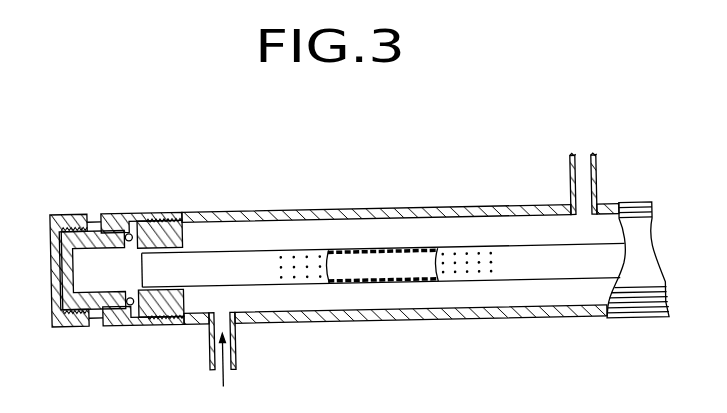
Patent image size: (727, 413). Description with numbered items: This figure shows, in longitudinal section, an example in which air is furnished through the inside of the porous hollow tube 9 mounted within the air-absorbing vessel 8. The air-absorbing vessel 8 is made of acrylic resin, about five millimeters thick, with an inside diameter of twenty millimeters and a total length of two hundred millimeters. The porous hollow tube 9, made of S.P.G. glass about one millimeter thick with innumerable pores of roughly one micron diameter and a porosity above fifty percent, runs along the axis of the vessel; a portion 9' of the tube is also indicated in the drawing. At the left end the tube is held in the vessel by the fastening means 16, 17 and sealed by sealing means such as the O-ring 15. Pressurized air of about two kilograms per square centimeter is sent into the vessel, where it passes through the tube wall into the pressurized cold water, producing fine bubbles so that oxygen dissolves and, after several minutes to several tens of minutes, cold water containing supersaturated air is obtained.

The air-absorbing vessel 8 is at (280, 188).
The porous hollow tube 9 is at (384, 308).
The perforated section of inner tube 9' is at (382, 310).
The O-ring 15 is at (168, 213).
The fastening means 16 is at (150, 308).
The fastening means 17 is at (95, 327).